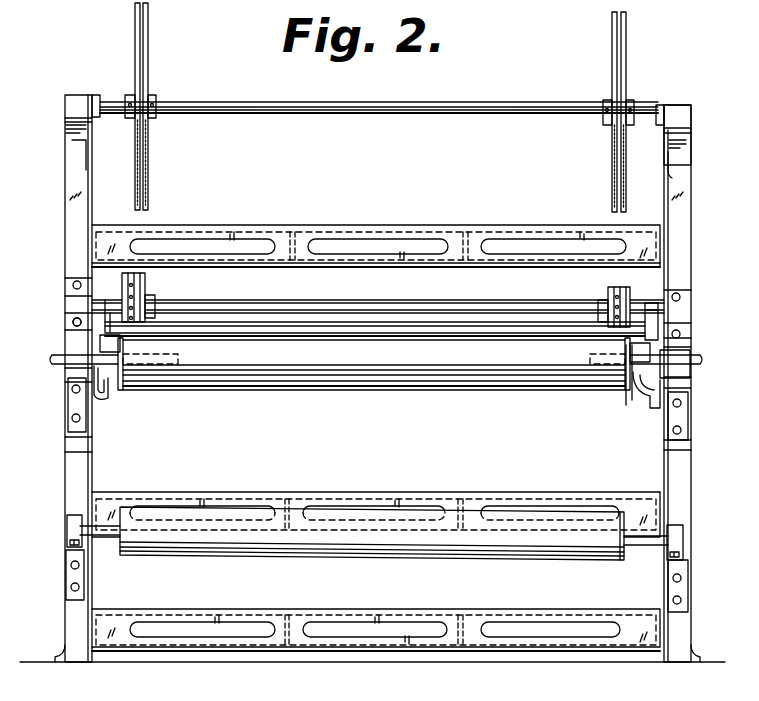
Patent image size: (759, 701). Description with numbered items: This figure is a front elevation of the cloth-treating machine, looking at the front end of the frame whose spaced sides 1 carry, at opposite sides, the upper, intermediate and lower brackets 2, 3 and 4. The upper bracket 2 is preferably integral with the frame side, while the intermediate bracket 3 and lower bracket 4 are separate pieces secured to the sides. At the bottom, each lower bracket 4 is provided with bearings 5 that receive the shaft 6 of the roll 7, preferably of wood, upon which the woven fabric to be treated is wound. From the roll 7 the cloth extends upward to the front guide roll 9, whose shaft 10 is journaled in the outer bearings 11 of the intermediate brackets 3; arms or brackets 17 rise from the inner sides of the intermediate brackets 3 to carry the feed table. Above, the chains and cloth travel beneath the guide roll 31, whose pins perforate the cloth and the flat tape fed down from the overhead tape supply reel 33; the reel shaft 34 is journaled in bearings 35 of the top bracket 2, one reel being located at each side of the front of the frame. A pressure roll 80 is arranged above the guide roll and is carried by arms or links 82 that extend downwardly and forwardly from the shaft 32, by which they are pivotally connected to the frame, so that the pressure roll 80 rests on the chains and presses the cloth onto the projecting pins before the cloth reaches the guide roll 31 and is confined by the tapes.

The sides 1 is at (72, 478).
The upper bracket 2 is at (672, 162).
The intermediate bracket 3 is at (687, 418).
The lower bracket 4 is at (684, 585).
The bearings 5 is at (672, 540).
The shaft 6 is at (645, 548).
The roll 7 is at (540, 555).
The front guide roll 9 is at (408, 380).
The shaft 10 is at (650, 396).
The outer bearings 11 is at (734, 363).
The arms or brackets 17 is at (650, 404).
The guide roll 31 is at (147, 283).
The shaft 32 is at (410, 312).
The tape supply reel 33 is at (149, 193).
The shaft 34 is at (392, 100).
The bearings 35 is at (686, 118).
The pressure roll 80 is at (307, 330).
The bearings or arms or links 82 is at (72, 323).